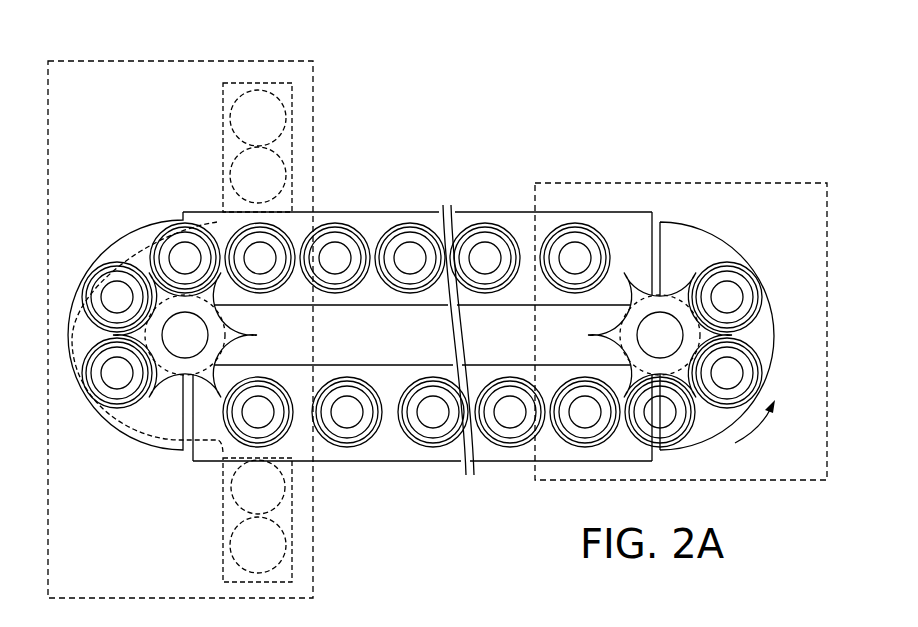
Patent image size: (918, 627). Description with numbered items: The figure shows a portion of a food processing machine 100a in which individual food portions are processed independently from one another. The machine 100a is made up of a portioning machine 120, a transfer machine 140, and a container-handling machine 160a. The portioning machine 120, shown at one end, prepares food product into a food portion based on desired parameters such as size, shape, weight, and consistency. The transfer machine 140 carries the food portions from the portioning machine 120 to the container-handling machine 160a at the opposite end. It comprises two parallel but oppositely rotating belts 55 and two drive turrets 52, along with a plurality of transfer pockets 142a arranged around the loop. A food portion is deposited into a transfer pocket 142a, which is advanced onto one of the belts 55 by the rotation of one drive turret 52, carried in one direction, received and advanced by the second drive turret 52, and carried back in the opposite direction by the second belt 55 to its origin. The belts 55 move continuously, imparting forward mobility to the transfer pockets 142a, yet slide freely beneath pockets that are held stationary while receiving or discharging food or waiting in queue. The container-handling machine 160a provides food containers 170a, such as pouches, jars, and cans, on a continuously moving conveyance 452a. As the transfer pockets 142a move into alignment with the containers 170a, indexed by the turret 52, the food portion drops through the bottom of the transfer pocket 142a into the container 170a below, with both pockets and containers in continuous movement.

The food processing machine 100a is at (692, 147).
The portioning machine 120 is at (748, 183).
The transfer machine 140 is at (428, 186).
The transfer pockets 142a is at (768, 355).
The container-handling machine 160a is at (141, 61).
The food containers 170a is at (292, 145).
The continuously moving conveyance 452a is at (222, 138).
The drive turrets 52 is at (137, 255).
The belts 55 is at (523, 213).